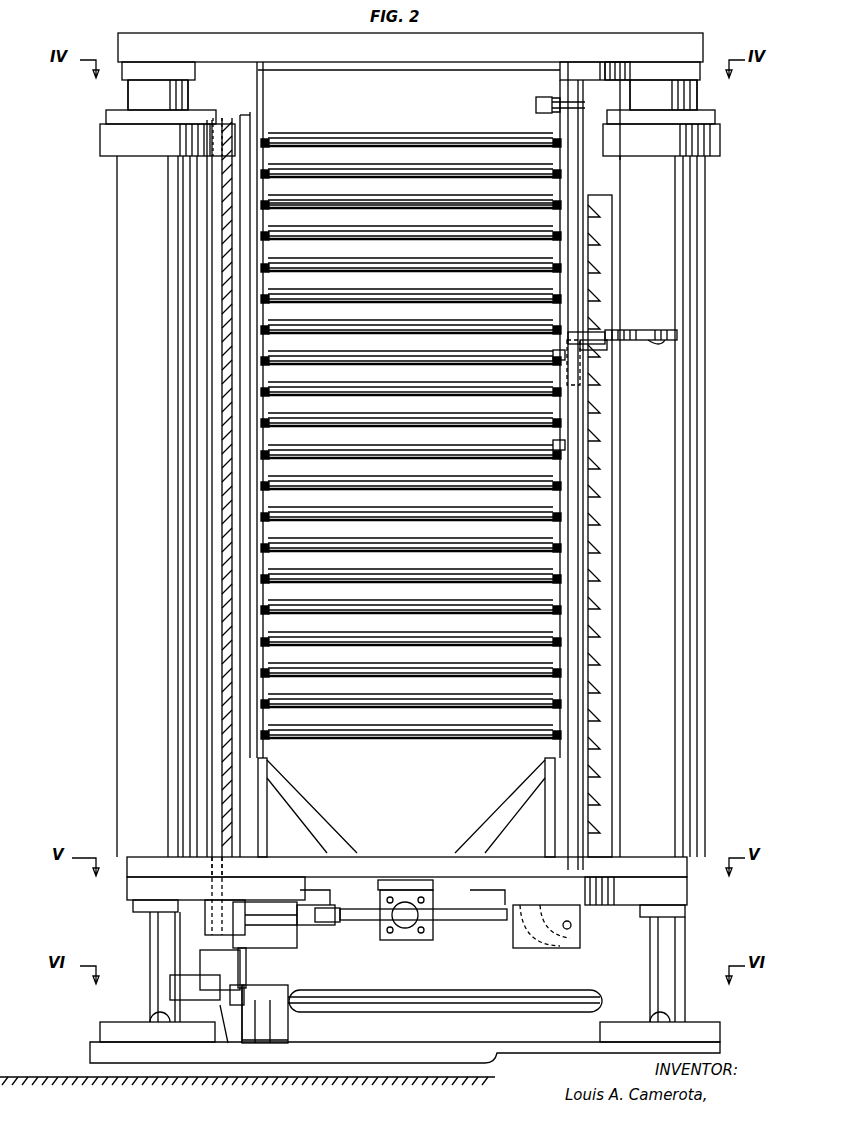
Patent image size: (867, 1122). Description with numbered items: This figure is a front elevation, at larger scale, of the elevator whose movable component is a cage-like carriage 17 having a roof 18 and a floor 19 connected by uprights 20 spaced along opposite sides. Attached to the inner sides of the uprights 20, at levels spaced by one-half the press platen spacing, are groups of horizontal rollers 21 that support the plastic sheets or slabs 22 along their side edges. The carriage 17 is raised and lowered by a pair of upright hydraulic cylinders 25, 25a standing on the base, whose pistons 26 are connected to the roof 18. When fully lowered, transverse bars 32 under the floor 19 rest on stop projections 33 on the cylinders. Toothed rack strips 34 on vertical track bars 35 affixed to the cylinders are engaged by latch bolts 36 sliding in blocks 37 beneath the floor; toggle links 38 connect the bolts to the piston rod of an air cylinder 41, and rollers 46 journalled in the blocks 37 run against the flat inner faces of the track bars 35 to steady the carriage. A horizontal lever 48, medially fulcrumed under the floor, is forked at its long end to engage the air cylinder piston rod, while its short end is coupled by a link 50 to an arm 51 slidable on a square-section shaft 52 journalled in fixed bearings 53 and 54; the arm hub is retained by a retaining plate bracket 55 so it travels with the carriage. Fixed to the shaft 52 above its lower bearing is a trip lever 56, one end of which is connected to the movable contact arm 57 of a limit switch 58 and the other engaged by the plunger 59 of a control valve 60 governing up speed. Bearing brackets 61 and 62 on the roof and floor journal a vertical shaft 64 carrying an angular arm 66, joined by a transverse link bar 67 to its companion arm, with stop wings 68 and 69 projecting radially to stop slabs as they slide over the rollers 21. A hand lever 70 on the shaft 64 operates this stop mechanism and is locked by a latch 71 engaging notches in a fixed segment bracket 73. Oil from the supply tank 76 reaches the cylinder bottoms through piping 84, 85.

The roof 18 is at (408, 72).
The floor 19 is at (403, 857).
The uprights 20 is at (552, 352).
The rollers 21 is at (272, 150).
The plastic sheets or slabs 22 is at (404, 178).
The hydraulic cylinder 25 is at (117, 497).
The hydraulic cylinder 25a is at (705, 521).
The pistons 26 is at (190, 94).
The transverse bars 32 is at (127, 890).
The stop projections 33 is at (140, 912).
The toothed rack strips 34 is at (240, 474).
The vertical track bars 35 is at (230, 184).
The latch bolts 36 is at (316, 925).
The blocks 37 is at (296, 925).
The toggle links 38 is at (470, 920).
The air cylinder 41 is at (405, 940).
The rollers 46 is at (564, 948).
The horizontal lever 48 is at (345, 922).
The link 50 is at (248, 918).
The arm 51 is at (248, 957).
The shaft 52 is at (215, 172).
The fixed bearing 53 is at (232, 118).
The fixed bearing 54 is at (224, 1043).
The retaining plate bracket 55 is at (230, 908).
The trip lever 56 is at (252, 990).
The movable contact arm 57 is at (218, 857).
The limit switch 58 is at (170, 990).
The plunger 59 is at (240, 1000).
The control valve 60 is at (280, 1018).
The bearing bracket 61 is at (590, 66).
The bearing bracket 62 is at (612, 877).
The vertical shaft 64 is at (560, 913).
The angular arm 66 is at (536, 103).
The transverse link bar 67 is at (534, 100).
The stop wing 68 is at (552, 444).
The stop wing 69 is at (606, 508).
The hand lever 70 is at (655, 330).
The latch 71 is at (668, 348).
The fixed segment bracket 73 is at (600, 352).
The supply tank 76 is at (405, 1050).
The piping 84 is at (326, 990).
The piping 85 is at (490, 990).
The carriage 17 is at (378, 888).